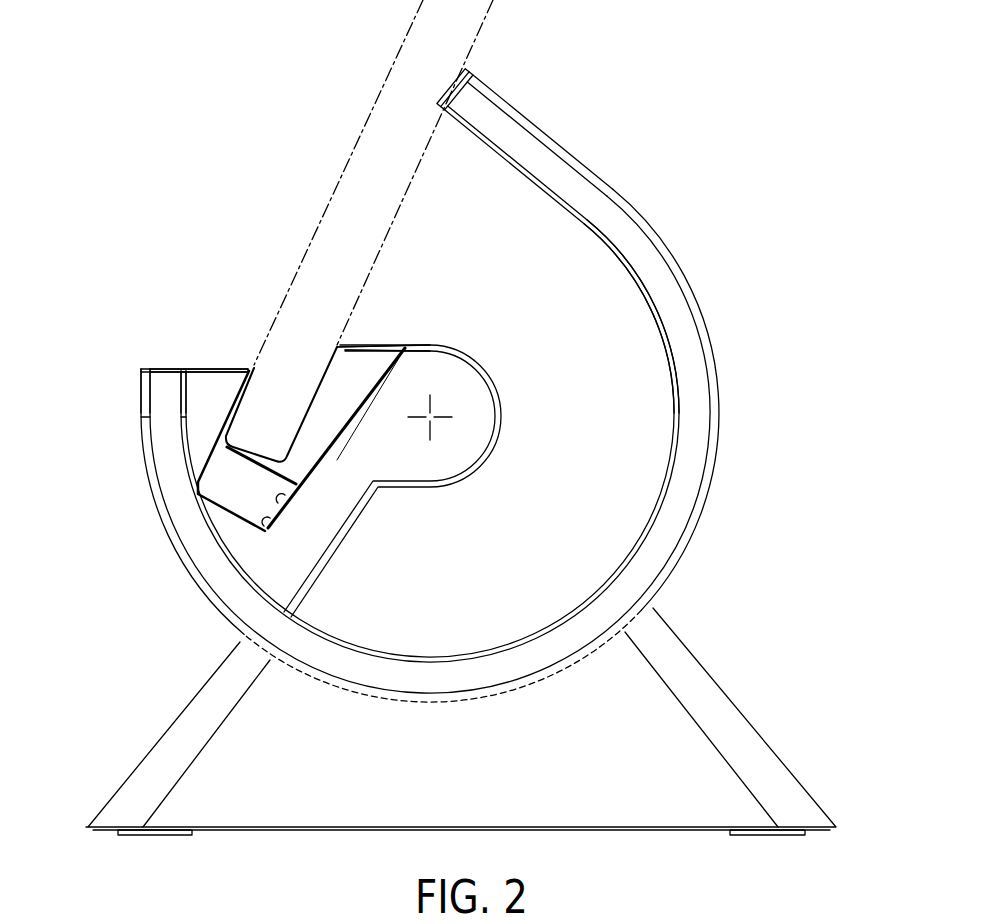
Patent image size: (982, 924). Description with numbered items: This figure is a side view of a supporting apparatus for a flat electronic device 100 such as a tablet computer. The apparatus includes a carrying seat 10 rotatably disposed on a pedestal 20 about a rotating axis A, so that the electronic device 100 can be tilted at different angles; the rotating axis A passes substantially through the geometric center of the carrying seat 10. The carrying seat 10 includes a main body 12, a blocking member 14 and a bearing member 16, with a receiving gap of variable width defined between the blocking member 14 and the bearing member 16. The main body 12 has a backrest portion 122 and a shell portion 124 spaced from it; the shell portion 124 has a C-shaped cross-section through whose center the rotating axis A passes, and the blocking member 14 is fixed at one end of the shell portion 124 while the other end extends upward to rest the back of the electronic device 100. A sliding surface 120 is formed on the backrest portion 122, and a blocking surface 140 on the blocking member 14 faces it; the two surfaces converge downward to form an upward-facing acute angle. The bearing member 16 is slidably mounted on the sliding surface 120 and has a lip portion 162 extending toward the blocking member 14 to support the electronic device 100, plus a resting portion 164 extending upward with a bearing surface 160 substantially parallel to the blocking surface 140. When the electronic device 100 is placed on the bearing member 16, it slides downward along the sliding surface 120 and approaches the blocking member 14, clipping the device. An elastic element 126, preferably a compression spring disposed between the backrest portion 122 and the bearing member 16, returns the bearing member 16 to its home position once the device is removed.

The carrying seat 10 is at (158, 556).
The main body 12 is at (590, 155).
The shell portion 124 is at (655, 273).
The blocking member 14 is at (209, 360).
The blocking surface 140 is at (240, 396).
The flat electronic device 100 is at (400, 52).
The bearing member 16 is at (375, 340).
The resting portion 164 is at (368, 368).
The bearing surface 160 is at (308, 402).
The lip portion 162 is at (246, 457).
The elastic element 126 is at (283, 503).
The sliding surface 120 is at (377, 393).
The backrest portion 122 is at (453, 442).
The rotating axis A is at (452, 417).
The pedestal 20 is at (156, 718).